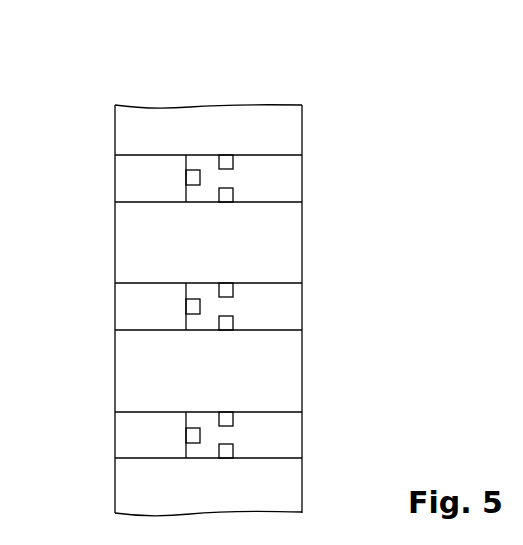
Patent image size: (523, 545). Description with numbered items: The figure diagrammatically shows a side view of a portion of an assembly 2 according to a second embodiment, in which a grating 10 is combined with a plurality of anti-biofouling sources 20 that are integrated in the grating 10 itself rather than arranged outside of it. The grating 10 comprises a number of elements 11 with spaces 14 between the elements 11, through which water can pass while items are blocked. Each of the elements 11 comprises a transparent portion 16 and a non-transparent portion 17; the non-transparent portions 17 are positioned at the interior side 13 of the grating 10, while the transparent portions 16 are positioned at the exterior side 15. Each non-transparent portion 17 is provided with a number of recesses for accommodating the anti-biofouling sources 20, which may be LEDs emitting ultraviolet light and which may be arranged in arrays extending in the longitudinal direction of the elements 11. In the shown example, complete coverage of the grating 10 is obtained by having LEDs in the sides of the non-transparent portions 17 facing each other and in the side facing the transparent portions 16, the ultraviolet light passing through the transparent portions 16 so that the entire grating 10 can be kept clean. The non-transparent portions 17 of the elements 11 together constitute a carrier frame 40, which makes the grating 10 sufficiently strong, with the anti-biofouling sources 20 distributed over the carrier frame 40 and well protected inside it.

The assembly 2 is at (101, 117).
The grating 10 is at (280, 129).
The elements 11 is at (133, 191).
The interior side 13 is at (302, 252).
The spaces 14 is at (286, 226).
The exterior side 15 is at (113, 248).
The transparent portions 16 is at (130, 177).
The non-transparent portions 17 is at (280, 180).
The anti-biofouling sources 20 is at (225, 190).
The carrier frame 40 is at (285, 315).